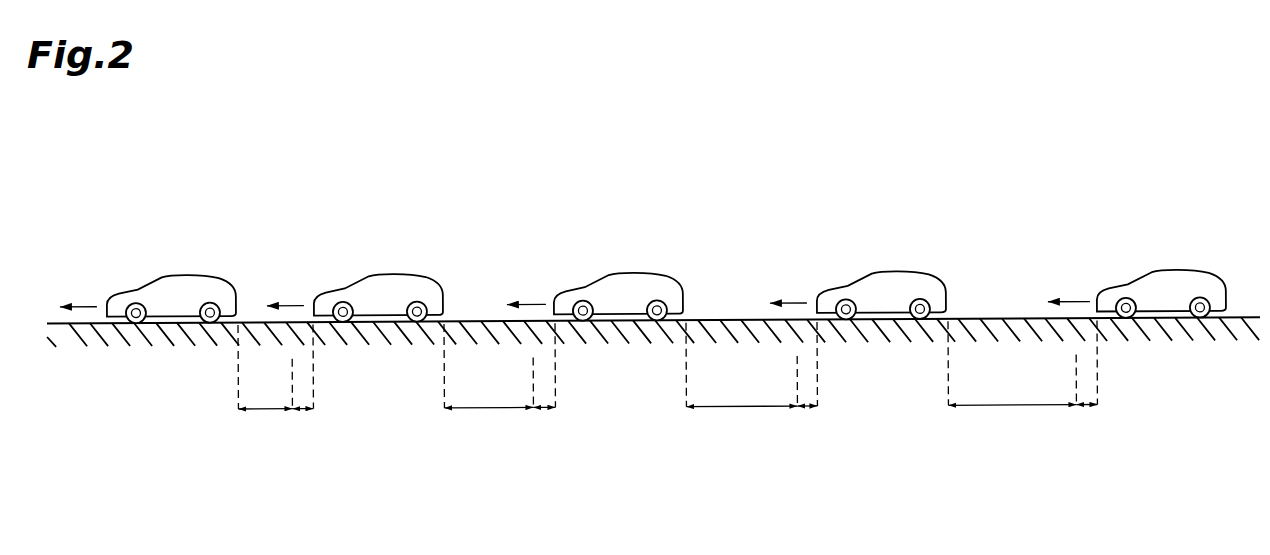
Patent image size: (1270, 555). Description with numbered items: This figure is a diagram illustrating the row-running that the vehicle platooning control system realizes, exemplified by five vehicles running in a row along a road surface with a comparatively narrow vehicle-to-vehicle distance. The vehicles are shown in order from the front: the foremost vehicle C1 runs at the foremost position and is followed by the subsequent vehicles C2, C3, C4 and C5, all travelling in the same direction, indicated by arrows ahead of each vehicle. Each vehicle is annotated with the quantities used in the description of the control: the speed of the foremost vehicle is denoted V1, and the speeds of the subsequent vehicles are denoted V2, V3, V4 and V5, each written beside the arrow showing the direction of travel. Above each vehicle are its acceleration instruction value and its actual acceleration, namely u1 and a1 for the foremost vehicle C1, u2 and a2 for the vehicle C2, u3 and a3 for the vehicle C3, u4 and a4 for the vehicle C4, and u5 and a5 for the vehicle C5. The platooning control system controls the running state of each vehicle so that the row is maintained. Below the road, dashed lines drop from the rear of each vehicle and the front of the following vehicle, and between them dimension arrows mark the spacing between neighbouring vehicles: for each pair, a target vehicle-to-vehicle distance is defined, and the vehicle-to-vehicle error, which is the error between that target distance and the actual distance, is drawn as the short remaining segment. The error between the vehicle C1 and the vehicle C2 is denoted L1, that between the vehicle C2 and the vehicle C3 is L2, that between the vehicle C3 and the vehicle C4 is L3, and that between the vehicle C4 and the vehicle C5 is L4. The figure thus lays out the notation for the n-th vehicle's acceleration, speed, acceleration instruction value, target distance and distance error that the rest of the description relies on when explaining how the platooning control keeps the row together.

The foremost vehicle C1 is at (171, 299).
The second vehicle C2 is at (378, 298).
The third vehicle C3 is at (618, 297).
The fourth vehicle C4 is at (881, 295).
The fifth vehicle C5 is at (1161, 294).
The speed of the foremost vehicle V1 is at (79, 292).
The speed of the second vehicle V2 is at (286, 291).
The speed of the third vehicle V3 is at (526, 289).
The speed of the fourth vehicle V4 is at (788, 288).
The speed of the fifth vehicle V5 is at (1069, 287).
The acceleration instruction value of the foremost vehicle u1 is at (177, 236).
The acceleration instruction value of the second vehicle u2 is at (384, 235).
The acceleration instruction value of the third vehicle u3 is at (624, 234).
The acceleration instruction value of the fourth vehicle u4 is at (888, 233).
The acceleration instruction value of the fifth vehicle u5 is at (1168, 231).
The acceleration of the foremost vehicle a1 is at (178, 256).
The acceleration of the second vehicle a2 is at (385, 255).
The acceleration of the third vehicle a3 is at (625, 254).
The acceleration of the fourth vehicle a4 is at (889, 253).
The acceleration of the fifth vehicle a5 is at (1169, 251).
The vehicle-to-vehicle error between the first and second vehicles L1 is at (302, 412).
The vehicle-to-vehicle error between the second and third vehicles L2 is at (544, 412).
The vehicle-to-vehicle error between the third and fourth vehicles L3 is at (807, 412).
The vehicle-to-vehicle error between the fourth and fifth vehicles L4 is at (1086, 412).